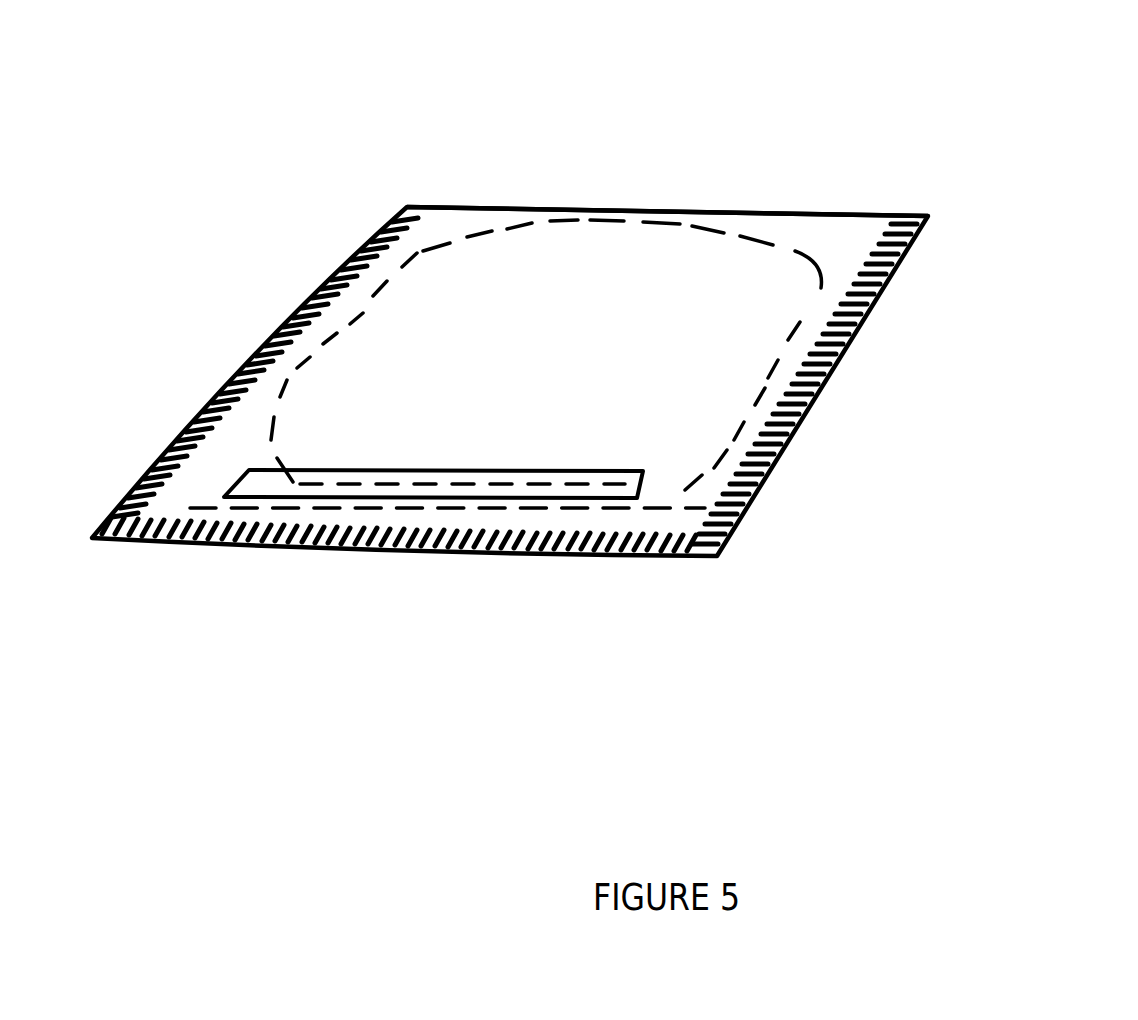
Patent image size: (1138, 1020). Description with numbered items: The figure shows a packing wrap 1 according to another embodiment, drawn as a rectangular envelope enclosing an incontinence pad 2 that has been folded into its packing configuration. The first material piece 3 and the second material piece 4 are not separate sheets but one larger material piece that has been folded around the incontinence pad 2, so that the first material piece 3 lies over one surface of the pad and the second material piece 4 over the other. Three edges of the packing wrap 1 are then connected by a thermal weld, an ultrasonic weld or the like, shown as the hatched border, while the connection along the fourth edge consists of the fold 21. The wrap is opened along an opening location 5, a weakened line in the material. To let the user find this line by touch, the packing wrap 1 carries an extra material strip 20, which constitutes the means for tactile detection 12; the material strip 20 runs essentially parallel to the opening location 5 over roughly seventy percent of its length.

The packing wrap 1 is at (715, 332).
The incontinence pad 2 is at (545, 265).
The first material piece 3 is at (818, 212).
The second material piece 4 is at (850, 243).
The opening location 5 is at (493, 517).
The means for tactile detection 12 is at (390, 485).
The material strip 20 is at (575, 487).
The fold 21 is at (487, 207).